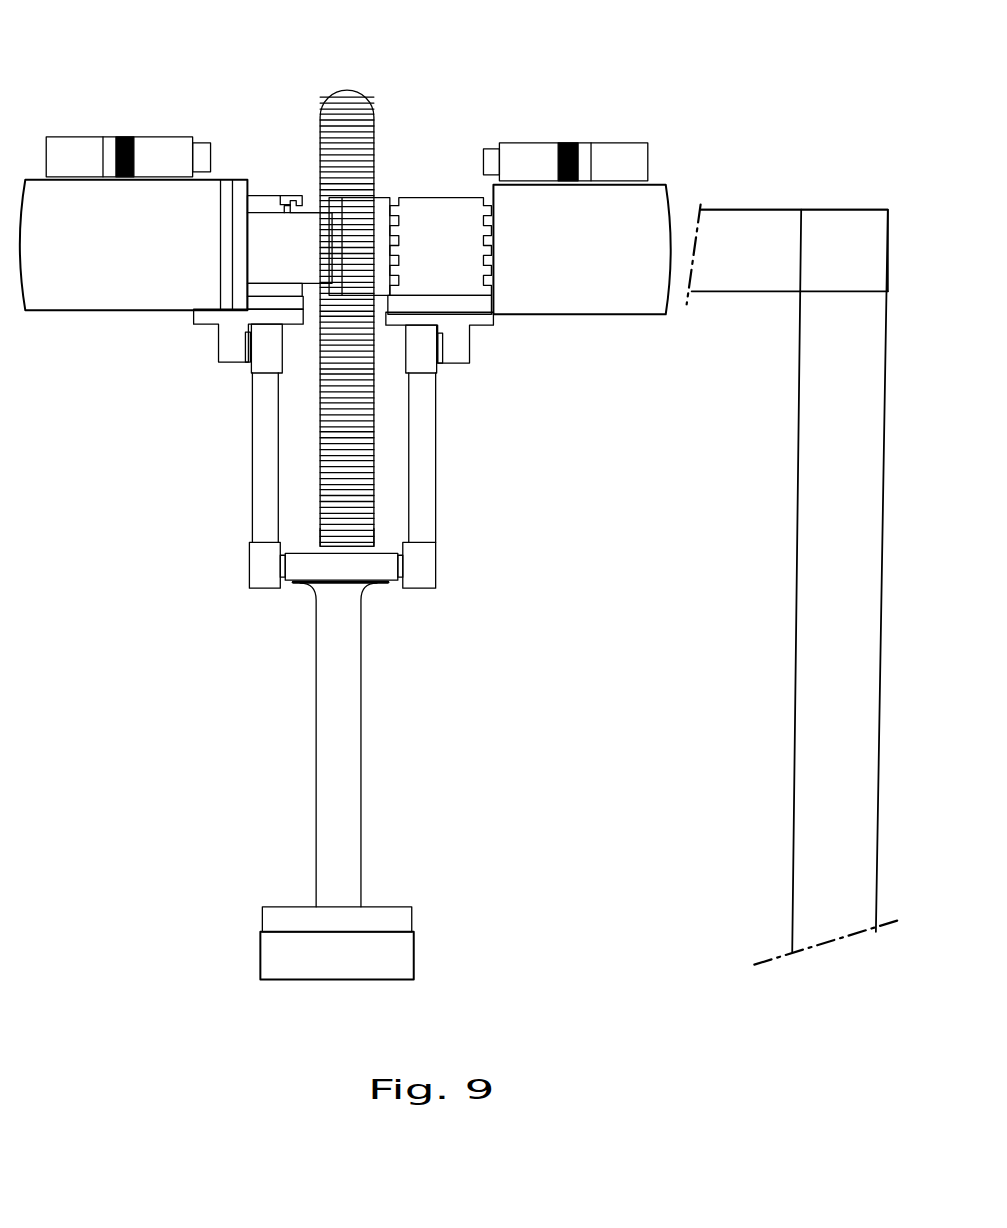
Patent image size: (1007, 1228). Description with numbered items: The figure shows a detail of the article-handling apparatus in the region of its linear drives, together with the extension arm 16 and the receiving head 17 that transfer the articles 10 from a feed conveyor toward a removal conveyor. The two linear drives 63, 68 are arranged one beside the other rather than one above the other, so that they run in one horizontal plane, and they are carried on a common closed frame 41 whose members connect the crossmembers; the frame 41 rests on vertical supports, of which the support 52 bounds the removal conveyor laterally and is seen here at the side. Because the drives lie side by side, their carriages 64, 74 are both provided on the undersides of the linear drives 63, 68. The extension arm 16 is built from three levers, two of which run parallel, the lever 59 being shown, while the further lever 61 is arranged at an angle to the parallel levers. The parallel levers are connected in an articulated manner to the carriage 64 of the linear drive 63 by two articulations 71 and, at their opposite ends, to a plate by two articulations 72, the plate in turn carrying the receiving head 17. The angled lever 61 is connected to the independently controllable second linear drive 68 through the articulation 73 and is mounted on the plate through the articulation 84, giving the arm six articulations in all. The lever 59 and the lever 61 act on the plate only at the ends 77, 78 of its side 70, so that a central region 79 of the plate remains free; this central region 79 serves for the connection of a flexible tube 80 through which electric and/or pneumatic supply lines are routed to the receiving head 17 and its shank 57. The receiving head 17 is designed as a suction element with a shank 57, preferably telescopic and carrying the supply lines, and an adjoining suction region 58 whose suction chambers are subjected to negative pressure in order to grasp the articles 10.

The articles 10 is at (280, 962).
The extension arm 16 is at (221, 473).
The receiving head 17 is at (353, 771).
The frame 41 is at (799, 486).
The support 52 is at (812, 510).
The shank 57 is at (345, 817).
The suction region 58 is at (278, 923).
The lever 59 is at (262, 467).
The lever 61 is at (420, 527).
The linear drive 63 is at (274, 140).
The carriage 64 is at (265, 307).
The linear drive 68 is at (428, 142).
The side 70 is at (308, 569).
The articulations 71 is at (250, 366).
The articulations 72 is at (293, 546).
The articulation 73 is at (446, 371).
The carriage 74 is at (440, 309).
The end 77 is at (268, 594).
The end 78 is at (422, 597).
The central region 79 is at (381, 522).
The flexible tube 80 is at (355, 133).
The articulation 84 is at (394, 590).